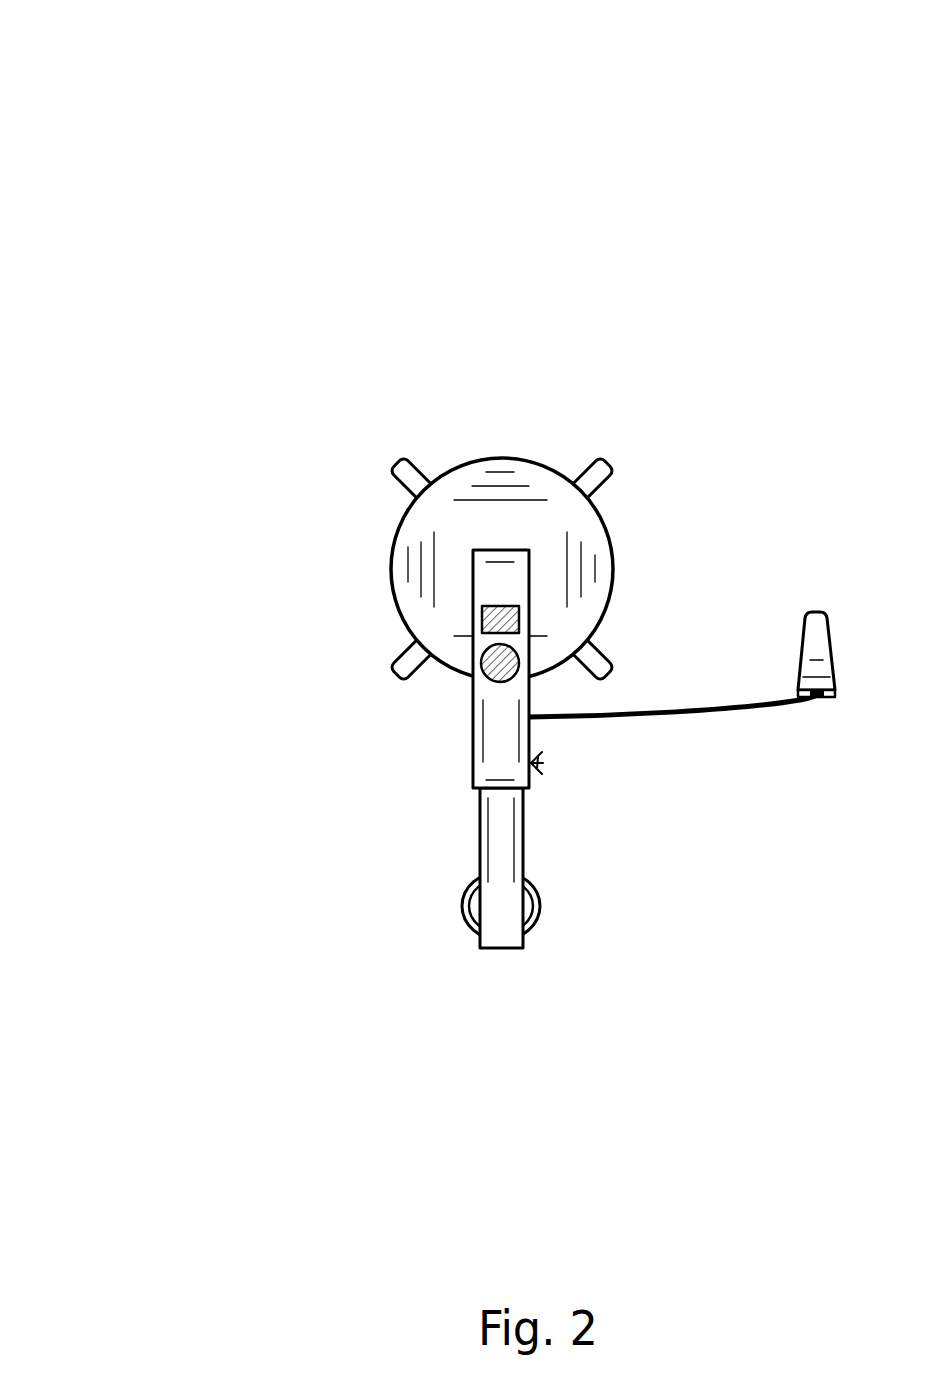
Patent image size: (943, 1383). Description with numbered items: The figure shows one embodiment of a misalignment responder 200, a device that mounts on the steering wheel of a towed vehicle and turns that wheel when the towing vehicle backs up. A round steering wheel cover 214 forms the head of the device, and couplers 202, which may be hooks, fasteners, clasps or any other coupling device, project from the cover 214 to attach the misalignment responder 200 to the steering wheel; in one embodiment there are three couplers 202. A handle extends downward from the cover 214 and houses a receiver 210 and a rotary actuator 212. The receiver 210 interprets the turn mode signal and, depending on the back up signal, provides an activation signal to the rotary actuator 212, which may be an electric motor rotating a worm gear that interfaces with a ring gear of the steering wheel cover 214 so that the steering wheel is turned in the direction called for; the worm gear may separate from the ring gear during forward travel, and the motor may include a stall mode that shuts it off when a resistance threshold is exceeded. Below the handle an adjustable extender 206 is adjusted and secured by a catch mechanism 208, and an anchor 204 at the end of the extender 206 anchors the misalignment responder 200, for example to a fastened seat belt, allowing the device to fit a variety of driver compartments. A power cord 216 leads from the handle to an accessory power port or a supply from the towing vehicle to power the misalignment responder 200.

The misalignment responder 200 is at (92, 67).
The couplers 202 is at (397, 457).
The anchor 204 is at (466, 927).
The extender 206 is at (478, 840).
The catch mechanism 208 is at (545, 763).
The receiver 210 is at (482, 606).
The rotary actuator 212 is at (492, 680).
The steering wheel cover 214 is at (613, 560).
The power cord 216 is at (818, 610).